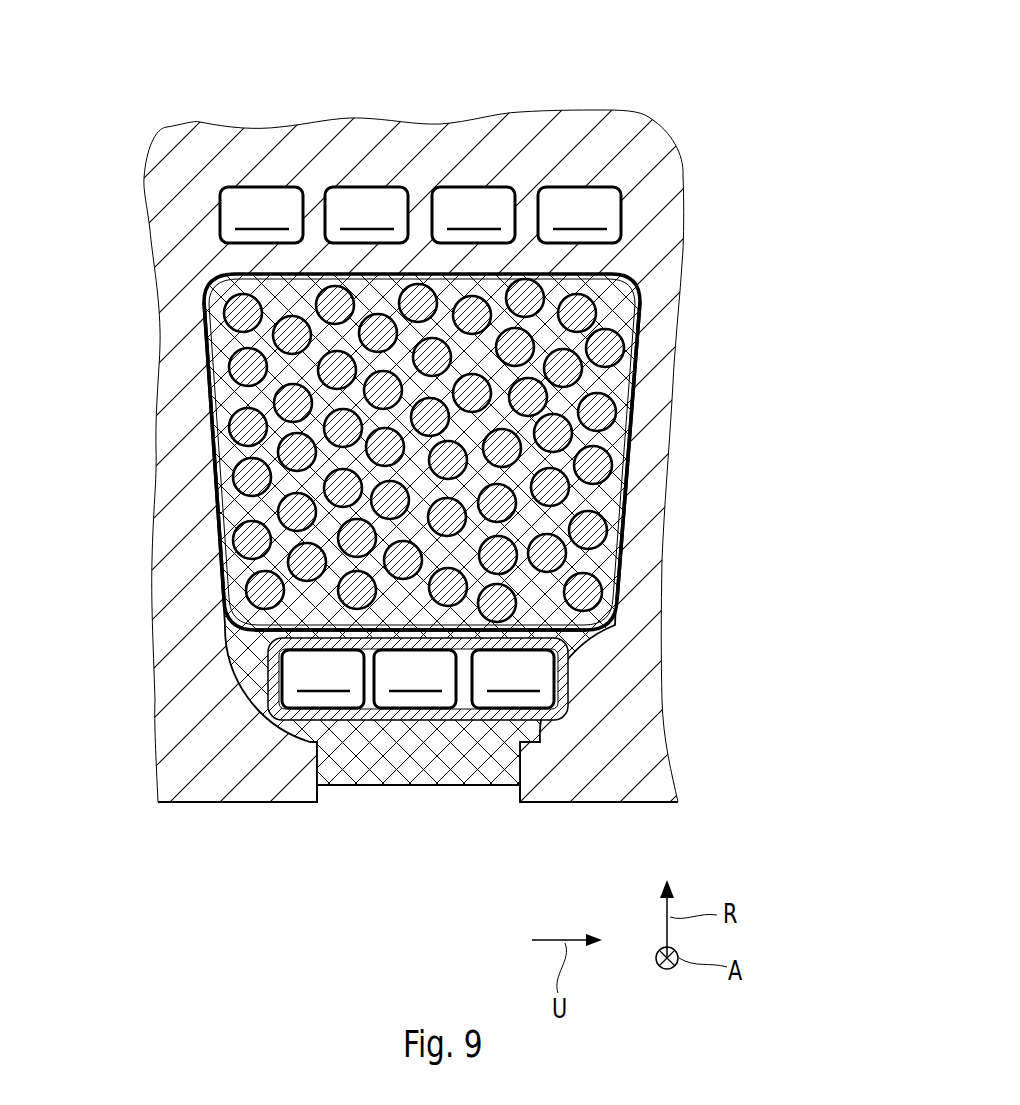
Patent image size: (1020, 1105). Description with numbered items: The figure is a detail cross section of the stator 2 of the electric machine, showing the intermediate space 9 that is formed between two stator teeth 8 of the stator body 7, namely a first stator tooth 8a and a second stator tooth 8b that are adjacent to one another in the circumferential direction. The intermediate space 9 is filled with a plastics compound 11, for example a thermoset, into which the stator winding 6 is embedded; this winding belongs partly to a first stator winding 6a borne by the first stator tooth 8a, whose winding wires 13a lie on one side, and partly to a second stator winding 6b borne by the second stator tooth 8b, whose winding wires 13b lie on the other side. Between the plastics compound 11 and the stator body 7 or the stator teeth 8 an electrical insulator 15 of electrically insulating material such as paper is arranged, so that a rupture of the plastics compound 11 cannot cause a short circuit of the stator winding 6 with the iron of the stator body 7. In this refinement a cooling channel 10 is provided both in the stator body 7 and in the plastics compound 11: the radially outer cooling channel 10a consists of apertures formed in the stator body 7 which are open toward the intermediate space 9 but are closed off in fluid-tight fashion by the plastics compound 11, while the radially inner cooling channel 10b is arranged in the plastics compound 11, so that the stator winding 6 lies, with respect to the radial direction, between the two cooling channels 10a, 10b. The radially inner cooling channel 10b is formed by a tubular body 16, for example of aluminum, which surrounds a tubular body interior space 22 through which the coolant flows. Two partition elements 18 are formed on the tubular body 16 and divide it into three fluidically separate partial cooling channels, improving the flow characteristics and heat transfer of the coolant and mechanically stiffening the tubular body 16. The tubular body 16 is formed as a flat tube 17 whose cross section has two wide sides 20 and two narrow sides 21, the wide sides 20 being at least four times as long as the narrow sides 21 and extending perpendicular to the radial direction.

The stator 2 is at (436, 441).
The stator winding 6 is at (432, 573).
The first stator winding 6a is at (228, 588).
The second stator winding 6b is at (641, 408).
The stator body 7 is at (428, 420).
The stator teeth 8 is at (428, 634).
The first stator tooth 8a is at (183, 483).
The second stator tooth 8b is at (655, 562).
The intermediate space 9 is at (603, 497).
The cooling channel 10 is at (433, 468).
The radially outer cooling channel 10a is at (437, 453).
The radially inner cooling channel 10b is at (419, 689).
The plastics compound 11 is at (603, 293).
The winding wires 13a is at (235, 366).
The winding wires 13b is at (590, 378).
The electrical insulator 15 is at (623, 628).
The tubular body 16 is at (419, 689).
The flat tube 17 is at (480, 737).
The partition elements 18 is at (348, 705).
The wide sides 20 is at (357, 453).
The narrow sides 21 is at (306, 212).
The tubular body interior space 22 is at (469, 172).